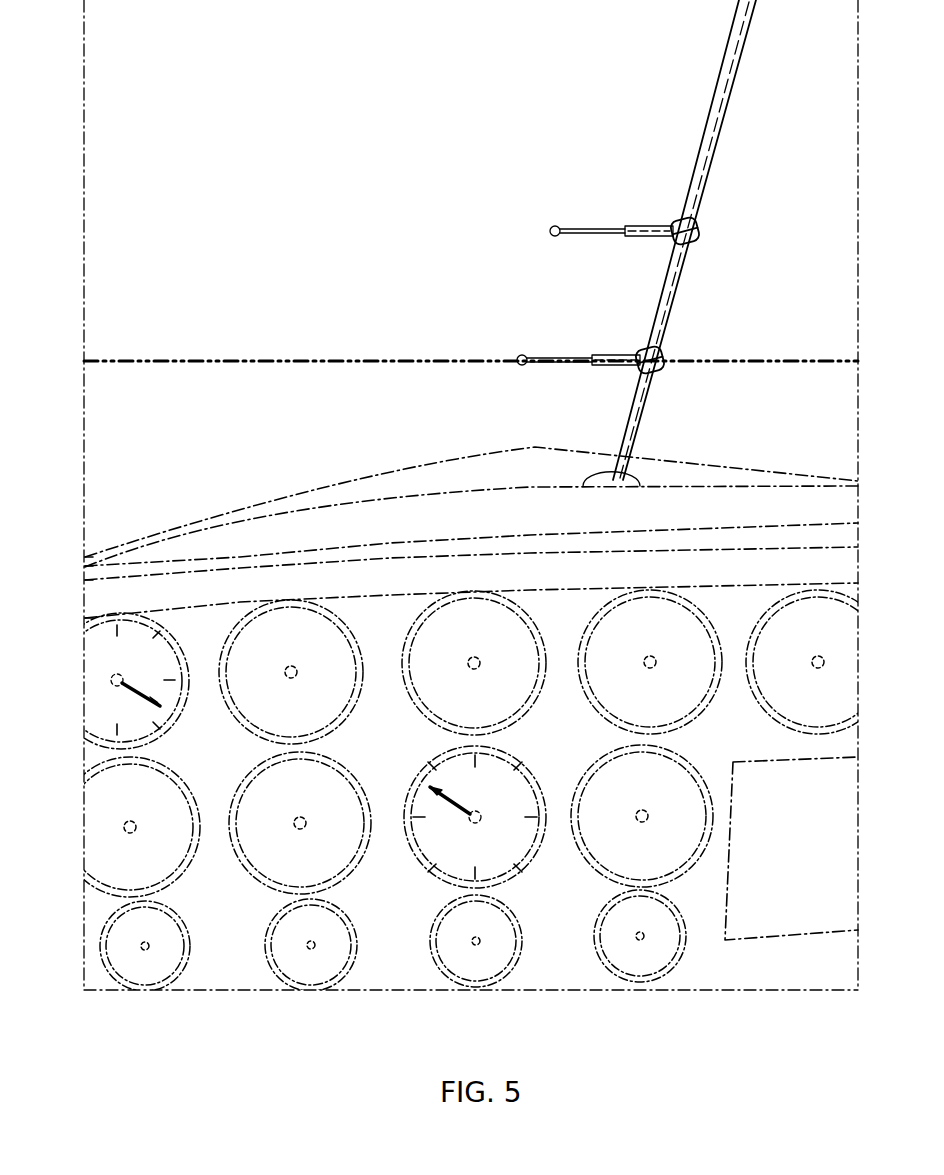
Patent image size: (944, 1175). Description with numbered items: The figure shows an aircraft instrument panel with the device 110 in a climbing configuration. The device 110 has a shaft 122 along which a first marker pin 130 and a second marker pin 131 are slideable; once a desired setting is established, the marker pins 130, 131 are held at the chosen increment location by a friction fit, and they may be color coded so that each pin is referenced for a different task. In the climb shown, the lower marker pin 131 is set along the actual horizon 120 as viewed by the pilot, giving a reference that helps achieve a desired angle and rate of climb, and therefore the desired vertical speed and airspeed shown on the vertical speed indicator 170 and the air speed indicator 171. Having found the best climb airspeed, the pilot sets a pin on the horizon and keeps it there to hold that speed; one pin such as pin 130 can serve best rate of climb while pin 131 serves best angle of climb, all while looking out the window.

The device 110 is at (709, 111).
The actual horizon 120 is at (195, 358).
The shaft 122 is at (681, 276).
The first marker pin 130 is at (600, 229).
The second marker pin 131 is at (570, 358).
The vertical speed indicator 170 is at (437, 880).
The air speed indicator 171 is at (90, 748).